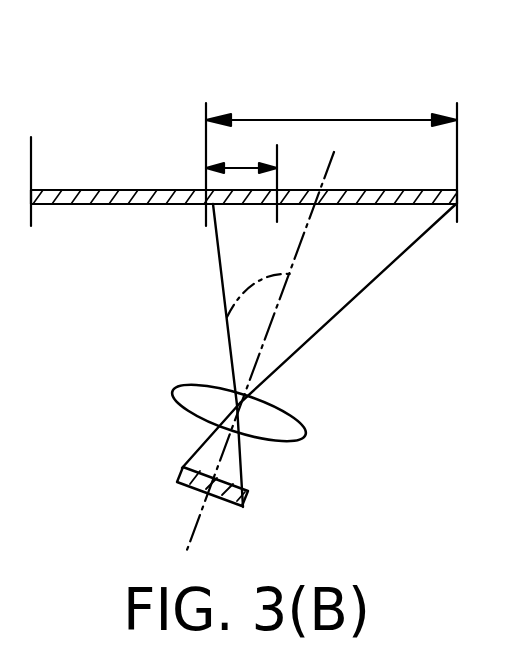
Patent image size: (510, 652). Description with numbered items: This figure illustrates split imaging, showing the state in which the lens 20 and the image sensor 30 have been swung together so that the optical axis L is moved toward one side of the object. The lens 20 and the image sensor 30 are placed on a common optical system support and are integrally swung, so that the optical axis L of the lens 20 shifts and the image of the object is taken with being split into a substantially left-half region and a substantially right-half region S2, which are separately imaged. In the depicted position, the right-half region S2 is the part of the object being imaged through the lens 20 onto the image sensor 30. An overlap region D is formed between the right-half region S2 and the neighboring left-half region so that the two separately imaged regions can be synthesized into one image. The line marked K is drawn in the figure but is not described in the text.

The lens 20 is at (307, 437).
The image sensor 30 is at (188, 487).
The right-half region S2 is at (328, 120).
The overlap region D is at (233, 166).
The optical axis K is at (346, 204).
The optical axis L is at (227, 312).